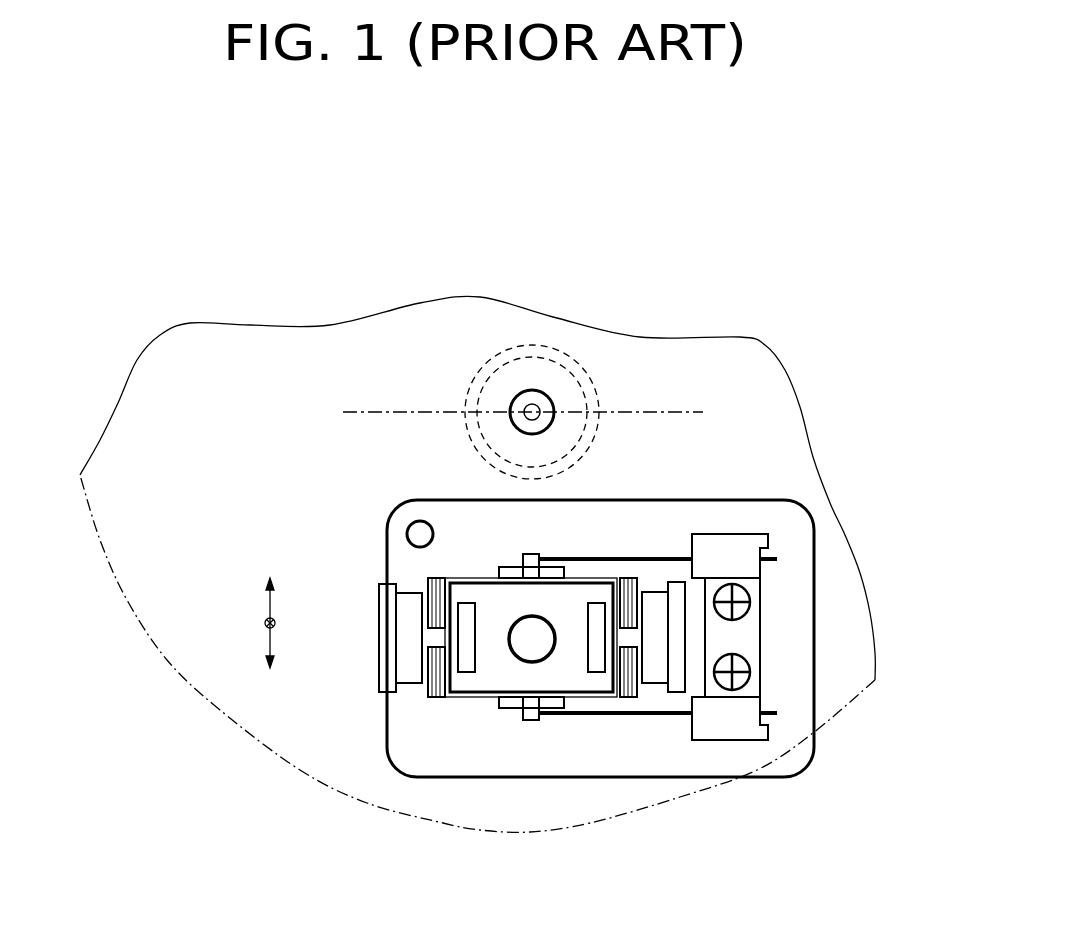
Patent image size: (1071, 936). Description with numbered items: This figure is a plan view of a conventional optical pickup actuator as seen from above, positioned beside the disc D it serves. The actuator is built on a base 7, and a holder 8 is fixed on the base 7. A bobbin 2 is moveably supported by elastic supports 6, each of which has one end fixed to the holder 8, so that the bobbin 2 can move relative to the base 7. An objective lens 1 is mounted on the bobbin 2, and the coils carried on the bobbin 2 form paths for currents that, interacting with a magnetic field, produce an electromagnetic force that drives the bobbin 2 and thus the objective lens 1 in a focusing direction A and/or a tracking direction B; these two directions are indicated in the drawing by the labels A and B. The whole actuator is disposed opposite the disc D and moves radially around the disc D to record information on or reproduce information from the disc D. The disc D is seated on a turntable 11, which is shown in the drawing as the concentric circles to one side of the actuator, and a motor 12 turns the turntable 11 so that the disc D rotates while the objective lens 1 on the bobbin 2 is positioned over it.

The objective lens 1 is at (523, 630).
The bobbin 2 is at (575, 595).
The elastic supports 6 is at (660, 556).
The base 7 is at (395, 552).
The holder 8 is at (730, 540).
The turntable 11 is at (500, 352).
The motor 12 is at (550, 360).
The disc D is at (793, 443).
The focusing direction A is at (265, 623).
The tracking direction B is at (269, 609).